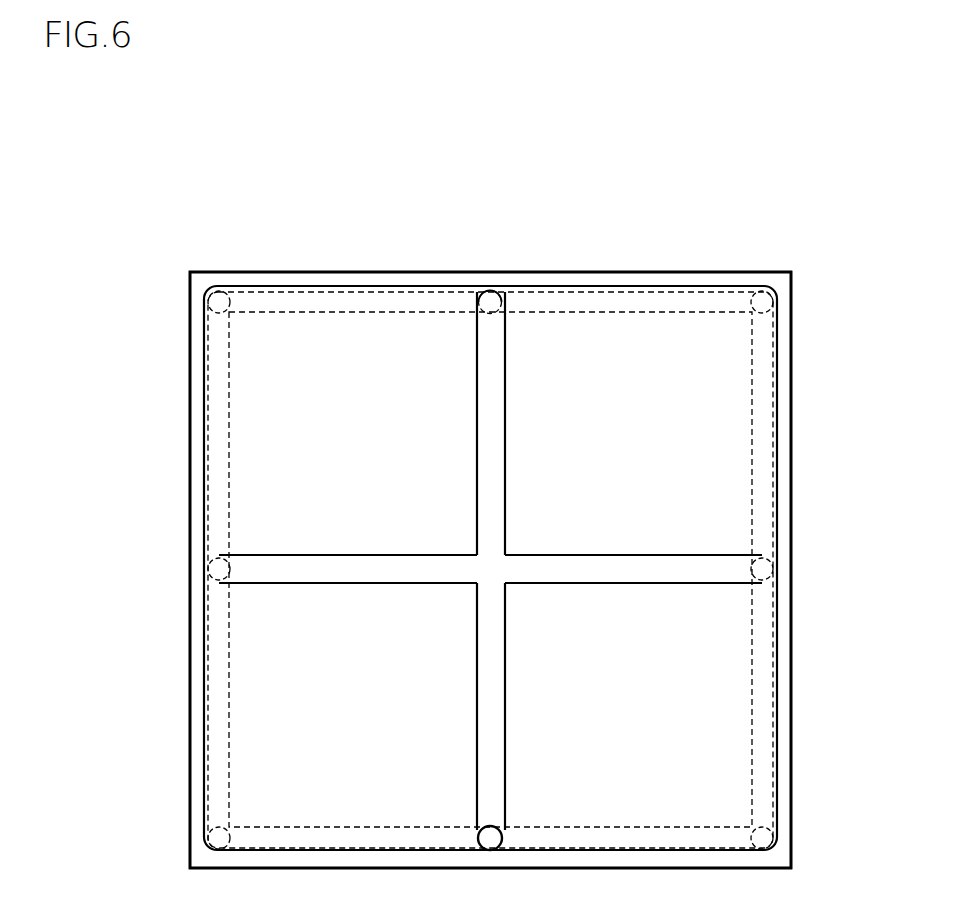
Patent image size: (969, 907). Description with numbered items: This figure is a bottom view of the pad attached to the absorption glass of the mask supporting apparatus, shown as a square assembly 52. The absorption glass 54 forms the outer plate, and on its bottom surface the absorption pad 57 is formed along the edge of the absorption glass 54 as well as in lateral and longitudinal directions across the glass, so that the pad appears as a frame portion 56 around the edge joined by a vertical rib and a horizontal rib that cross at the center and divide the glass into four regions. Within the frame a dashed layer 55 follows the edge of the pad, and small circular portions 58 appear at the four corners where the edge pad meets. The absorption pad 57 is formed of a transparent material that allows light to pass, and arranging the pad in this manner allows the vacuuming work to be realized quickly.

The battery module / case 52 is at (816, 311).
The absorption glass 54 is at (793, 445).
The inner frame layer (dashed) 55 is at (768, 398).
The inner frame 56 is at (777, 363).
The absorption pad 57 is at (493, 335).
The corner coupling holes 58 is at (762, 302).